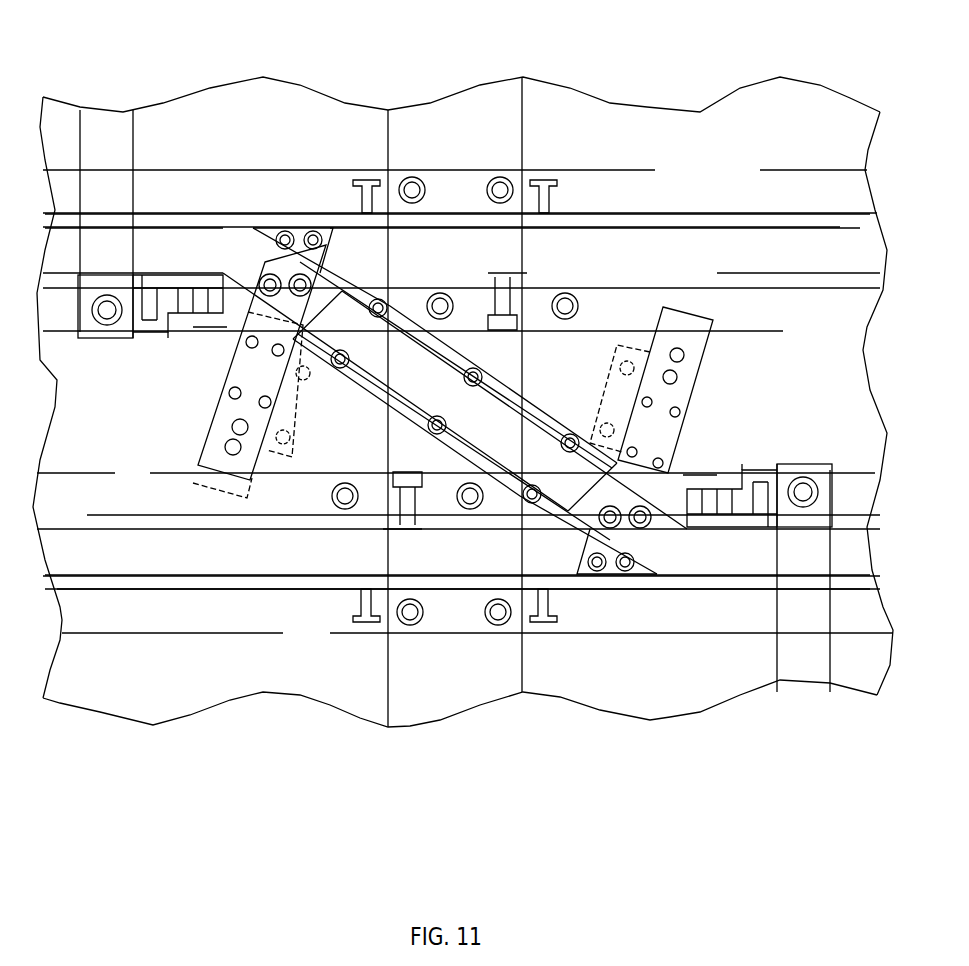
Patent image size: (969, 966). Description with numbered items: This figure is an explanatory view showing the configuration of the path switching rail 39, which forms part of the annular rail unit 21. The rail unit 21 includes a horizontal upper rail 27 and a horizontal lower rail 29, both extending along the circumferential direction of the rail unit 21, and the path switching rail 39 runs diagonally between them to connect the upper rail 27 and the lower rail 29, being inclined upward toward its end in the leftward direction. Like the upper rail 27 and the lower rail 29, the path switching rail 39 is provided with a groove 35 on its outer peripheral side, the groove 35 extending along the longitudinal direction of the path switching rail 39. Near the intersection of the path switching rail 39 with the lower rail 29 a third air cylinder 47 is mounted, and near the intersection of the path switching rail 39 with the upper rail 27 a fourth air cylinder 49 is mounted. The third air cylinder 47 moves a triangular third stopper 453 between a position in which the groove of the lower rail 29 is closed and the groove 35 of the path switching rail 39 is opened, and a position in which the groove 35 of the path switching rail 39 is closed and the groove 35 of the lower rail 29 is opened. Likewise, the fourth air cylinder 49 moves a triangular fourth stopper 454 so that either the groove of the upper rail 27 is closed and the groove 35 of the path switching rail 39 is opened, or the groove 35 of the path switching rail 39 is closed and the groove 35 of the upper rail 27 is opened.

The rail unit 21 is at (650, 170).
The upper rail 27 is at (162, 243).
The lower rail 29 is at (143, 557).
The groove 35 is at (222, 242).
The path switching rail 39 is at (462, 423).
The third air cylinder 47 is at (657, 437).
The fourth air cylinder 49 is at (232, 408).
The third stopper 453 is at (640, 542).
The fourth stopper 454 is at (303, 258).